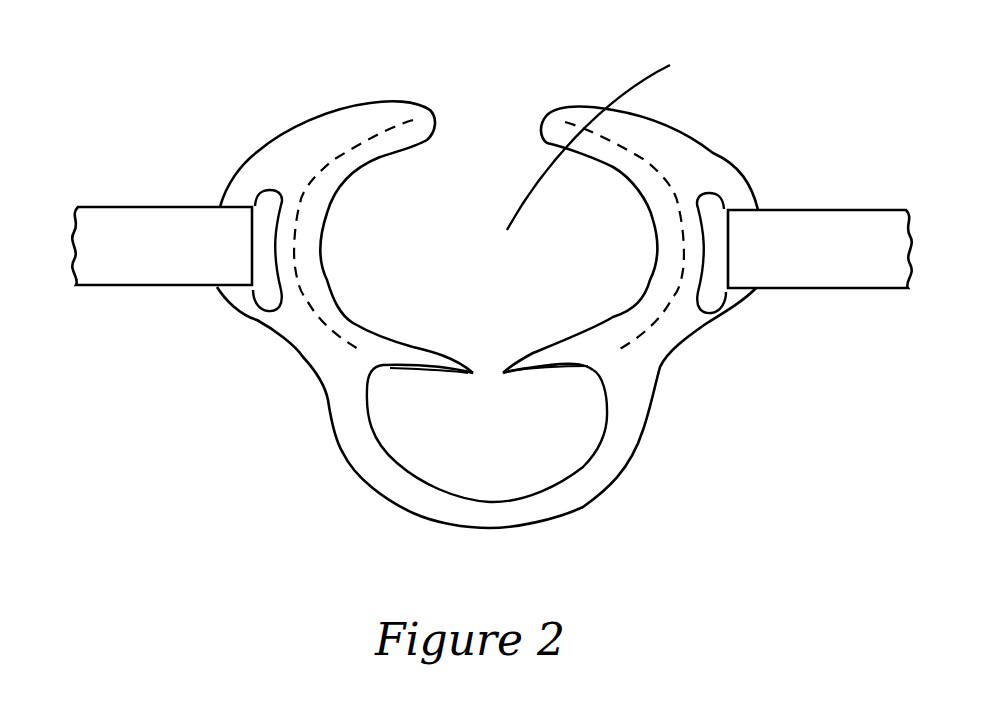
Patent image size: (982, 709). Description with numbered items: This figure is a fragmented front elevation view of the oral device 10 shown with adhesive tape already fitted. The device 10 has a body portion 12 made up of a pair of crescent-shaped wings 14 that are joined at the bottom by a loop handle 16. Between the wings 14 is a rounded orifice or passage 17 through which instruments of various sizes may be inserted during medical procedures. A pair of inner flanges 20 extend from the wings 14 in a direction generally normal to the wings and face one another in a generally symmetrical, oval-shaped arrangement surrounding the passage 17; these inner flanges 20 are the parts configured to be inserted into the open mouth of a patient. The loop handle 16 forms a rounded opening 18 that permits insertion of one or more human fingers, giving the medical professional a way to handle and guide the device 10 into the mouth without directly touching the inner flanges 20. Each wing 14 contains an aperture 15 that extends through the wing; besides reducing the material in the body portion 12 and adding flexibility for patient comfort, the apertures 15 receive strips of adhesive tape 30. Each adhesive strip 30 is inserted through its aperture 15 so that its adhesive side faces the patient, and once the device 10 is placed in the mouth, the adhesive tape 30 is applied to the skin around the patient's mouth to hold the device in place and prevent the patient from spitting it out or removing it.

The device 10 is at (348, 112).
The body portion 12 is at (307, 343).
The crescent-shaped wings 14 is at (290, 157).
The apertures 15 is at (260, 290).
The loop handle 16 is at (617, 430).
The passage 17 is at (606, 134).
The rounded opening 18 is at (527, 453).
The inner flanges 20 is at (360, 340).
The adhesive tape strips 30 is at (170, 259).